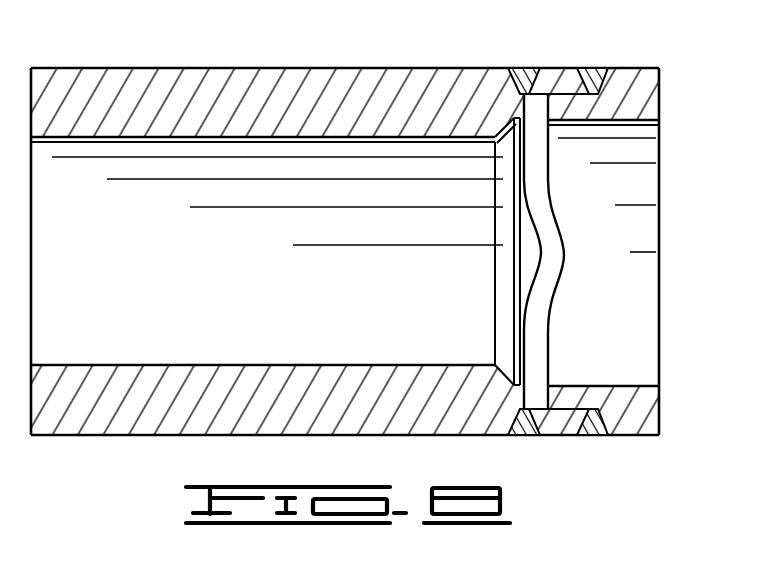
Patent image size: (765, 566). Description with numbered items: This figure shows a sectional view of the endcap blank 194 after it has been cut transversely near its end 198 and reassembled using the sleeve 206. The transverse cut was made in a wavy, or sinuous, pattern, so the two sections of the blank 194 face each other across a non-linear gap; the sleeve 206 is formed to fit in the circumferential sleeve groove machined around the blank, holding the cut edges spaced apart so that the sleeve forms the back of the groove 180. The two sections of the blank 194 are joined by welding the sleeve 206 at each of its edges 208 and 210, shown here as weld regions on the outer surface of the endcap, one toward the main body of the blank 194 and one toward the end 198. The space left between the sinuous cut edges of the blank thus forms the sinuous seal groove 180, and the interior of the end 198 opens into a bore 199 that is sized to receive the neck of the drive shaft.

The endcap blank 194 is at (197, 66).
The end of the blank 198 is at (660, 110).
The bore of second tubular member 199 is at (622, 340).
The edge of the sleeve 208 is at (518, 70).
The edge of the sleeve 210 is at (585, 70).
The sleeve 206 is at (553, 425).
The sinuous groove 180 is at (552, 237).